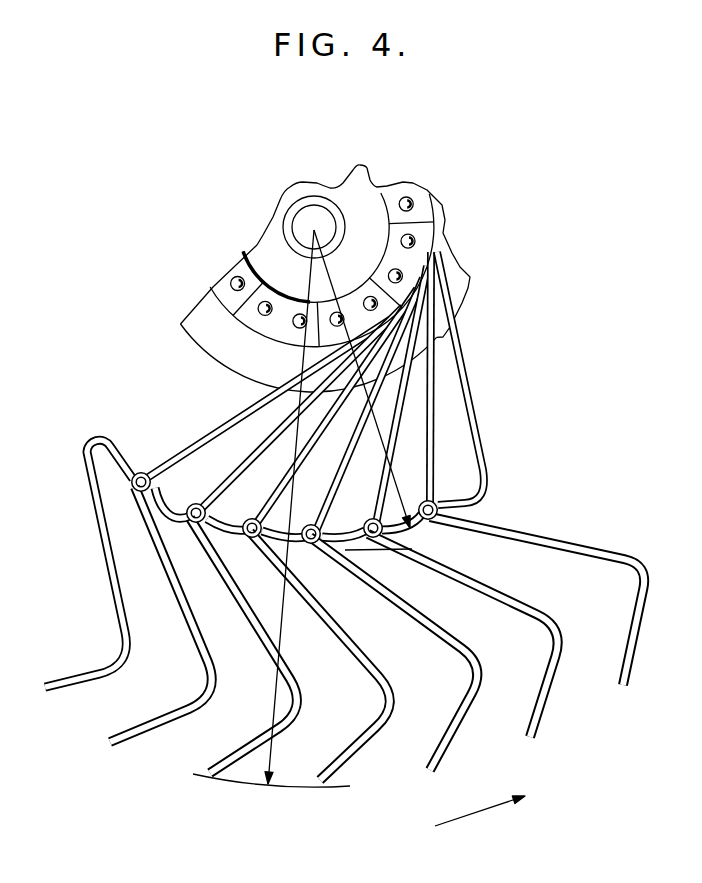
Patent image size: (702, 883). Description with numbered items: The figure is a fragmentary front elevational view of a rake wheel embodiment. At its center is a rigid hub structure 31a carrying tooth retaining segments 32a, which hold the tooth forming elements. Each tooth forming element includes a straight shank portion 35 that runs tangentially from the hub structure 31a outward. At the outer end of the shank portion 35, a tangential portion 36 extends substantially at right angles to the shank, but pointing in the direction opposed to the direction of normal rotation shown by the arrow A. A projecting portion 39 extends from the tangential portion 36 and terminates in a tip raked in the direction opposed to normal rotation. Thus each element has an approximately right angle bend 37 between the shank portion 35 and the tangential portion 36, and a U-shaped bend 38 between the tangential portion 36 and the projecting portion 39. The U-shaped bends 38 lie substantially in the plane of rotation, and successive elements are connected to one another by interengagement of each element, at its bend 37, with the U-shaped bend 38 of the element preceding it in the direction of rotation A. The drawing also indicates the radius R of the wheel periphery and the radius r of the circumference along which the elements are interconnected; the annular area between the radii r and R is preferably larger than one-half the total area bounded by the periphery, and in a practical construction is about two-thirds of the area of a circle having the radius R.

The rigid hub structure 31a is at (257, 245).
The tooth retaining segments 32a is at (212, 288).
The straight shank portion 35 is at (209, 441).
The tangential portion 36 is at (113, 458).
The right angle bend 37 is at (198, 506).
The U-shaped bend 38 is at (93, 440).
The projecting portion 39 is at (104, 575).
The radius of rake wheel periphery R is at (283, 630).
The radius of interconnection circumference r is at (378, 438).
The arrow indicating direction of normal rotation A is at (480, 826).